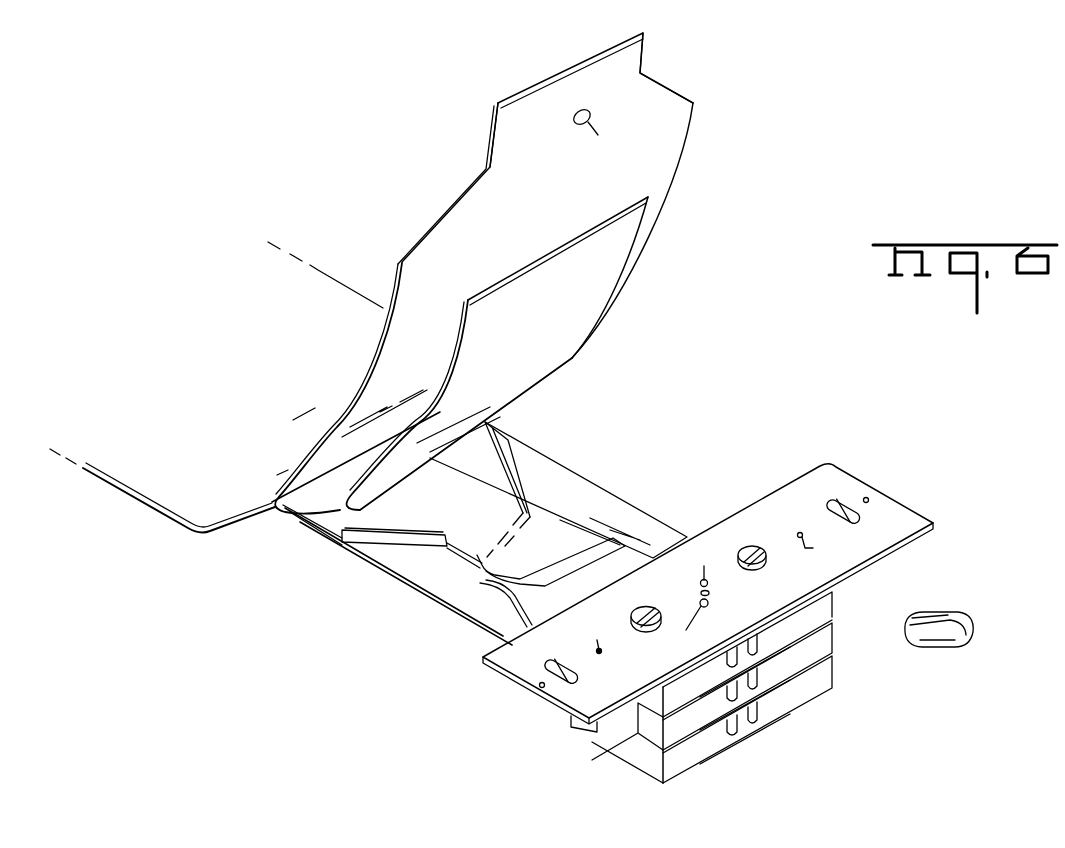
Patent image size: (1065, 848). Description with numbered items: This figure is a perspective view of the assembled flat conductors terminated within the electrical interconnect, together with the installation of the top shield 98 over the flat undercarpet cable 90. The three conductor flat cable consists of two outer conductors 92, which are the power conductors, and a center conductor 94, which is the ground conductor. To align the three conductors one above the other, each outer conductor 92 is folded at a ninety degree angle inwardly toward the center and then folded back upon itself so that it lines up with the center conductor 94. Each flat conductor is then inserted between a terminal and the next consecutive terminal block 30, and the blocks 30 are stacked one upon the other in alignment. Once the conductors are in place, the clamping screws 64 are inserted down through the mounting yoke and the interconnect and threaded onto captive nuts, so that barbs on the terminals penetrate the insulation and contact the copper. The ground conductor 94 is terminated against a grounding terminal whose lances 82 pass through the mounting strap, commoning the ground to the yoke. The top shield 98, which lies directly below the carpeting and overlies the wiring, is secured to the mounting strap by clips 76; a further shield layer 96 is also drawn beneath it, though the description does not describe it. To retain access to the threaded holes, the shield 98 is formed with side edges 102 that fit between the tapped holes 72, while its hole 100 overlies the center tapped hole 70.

The terminal block 30 is at (849, 634).
The clamping screws 64 is at (641, 608).
The tapped center hole 70 is at (710, 594).
The tapped holes 72 is at (706, 593).
The clips 76 is at (950, 624).
The lances 82 is at (684, 596).
The flat undercarpet cable 90 is at (618, 444).
The outer conductors 92 is at (371, 520).
The center conductor 94 is at (540, 540).
The inner curved plate 96 is at (602, 280).
The top shield 98 is at (672, 166).
The hole 100 is at (605, 126).
The side edges 102 is at (645, 59).